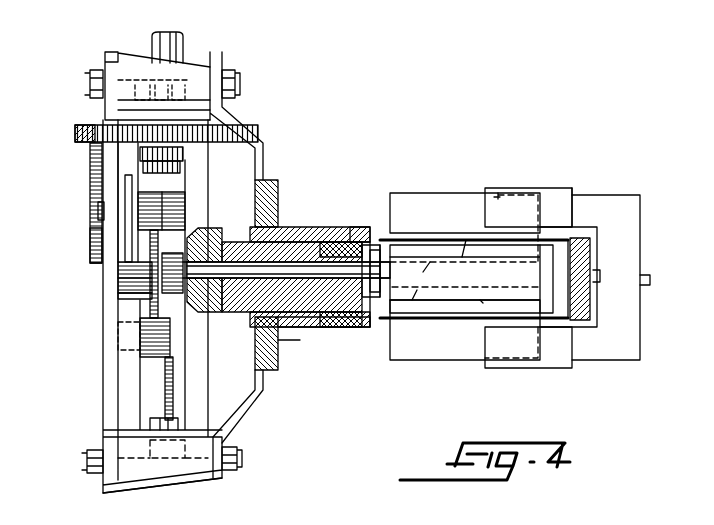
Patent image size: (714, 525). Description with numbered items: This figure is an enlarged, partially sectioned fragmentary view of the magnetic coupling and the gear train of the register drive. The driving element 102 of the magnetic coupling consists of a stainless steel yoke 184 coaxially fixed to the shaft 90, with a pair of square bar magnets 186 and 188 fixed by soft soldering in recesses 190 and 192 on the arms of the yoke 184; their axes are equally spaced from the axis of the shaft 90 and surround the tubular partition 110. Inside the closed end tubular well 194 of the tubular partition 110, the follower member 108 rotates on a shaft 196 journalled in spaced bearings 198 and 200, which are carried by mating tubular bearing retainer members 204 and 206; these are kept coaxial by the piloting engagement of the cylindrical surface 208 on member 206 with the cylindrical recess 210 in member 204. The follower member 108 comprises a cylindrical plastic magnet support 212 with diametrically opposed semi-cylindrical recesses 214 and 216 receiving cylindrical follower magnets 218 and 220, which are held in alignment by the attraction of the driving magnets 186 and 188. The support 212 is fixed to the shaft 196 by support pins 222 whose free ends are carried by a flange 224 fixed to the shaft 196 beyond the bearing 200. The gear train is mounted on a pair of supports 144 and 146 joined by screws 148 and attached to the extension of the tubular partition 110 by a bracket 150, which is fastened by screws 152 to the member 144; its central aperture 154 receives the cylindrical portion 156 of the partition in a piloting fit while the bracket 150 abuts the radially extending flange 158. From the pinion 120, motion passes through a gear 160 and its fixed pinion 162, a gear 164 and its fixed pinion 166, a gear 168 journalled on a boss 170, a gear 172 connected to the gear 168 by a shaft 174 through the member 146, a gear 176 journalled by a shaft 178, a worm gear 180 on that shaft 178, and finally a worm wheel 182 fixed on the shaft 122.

The shaft 90 is at (650, 280).
The magnetic drive coupling driving element 102 is at (547, 178).
The follower member 108 is at (460, 303).
The tubular partition 110 is at (372, 330).
The pinion 120 is at (172, 255).
The shaft 122 is at (183, 40).
The support 144 is at (162, 480).
The support 146 is at (106, 494).
The screws 148 is at (88, 473).
The bracket 150 is at (250, 420).
The screws 152 is at (238, 68).
The central aperture 154 is at (258, 342).
The cylindrical portion 156 is at (252, 327).
The radially extending flange 158 is at (270, 366).
The gear 160 is at (165, 400).
The pinion 162 is at (146, 360).
The gear 164 is at (150, 305).
The pinion 166 is at (118, 296).
The gear 168 is at (118, 272).
The boss 170 is at (190, 196).
The gear 172 is at (90, 246).
The shaft 174 is at (98, 211).
The gear 176 is at (90, 112).
The shaft 178 is at (90, 165).
The worm gear 180 is at (185, 165).
The worm wheel 182 is at (260, 133).
The yoke 184 is at (636, 195).
The square bar magnet 186 is at (440, 193).
The square bar magnet 188 is at (397, 362).
The recess 190 is at (500, 188).
The recess 192 is at (510, 368).
The closed end tubular well 194 is at (590, 250).
The shaft 196 is at (271, 294).
The bearing 198 is at (215, 240).
The bearing 200 is at (360, 230).
The tubular bearing retainer member 204 is at (310, 227).
The tubular bearing retainer member 206 is at (335, 242).
The cylindrical surface 208 is at (330, 328).
The cylindrical recess 210 is at (312, 328).
The cylindrical plastic magnet support 212 is at (590, 300).
The semi-cylindrical recess 214 is at (430, 262).
The semi-cylindrical recess 216 is at (412, 300).
The cylindrical follower magnet 218 is at (466, 240).
The cylindrical follower magnet 220 is at (480, 300).
The support pins 222 is at (478, 277).
The flange 224 is at (372, 245).